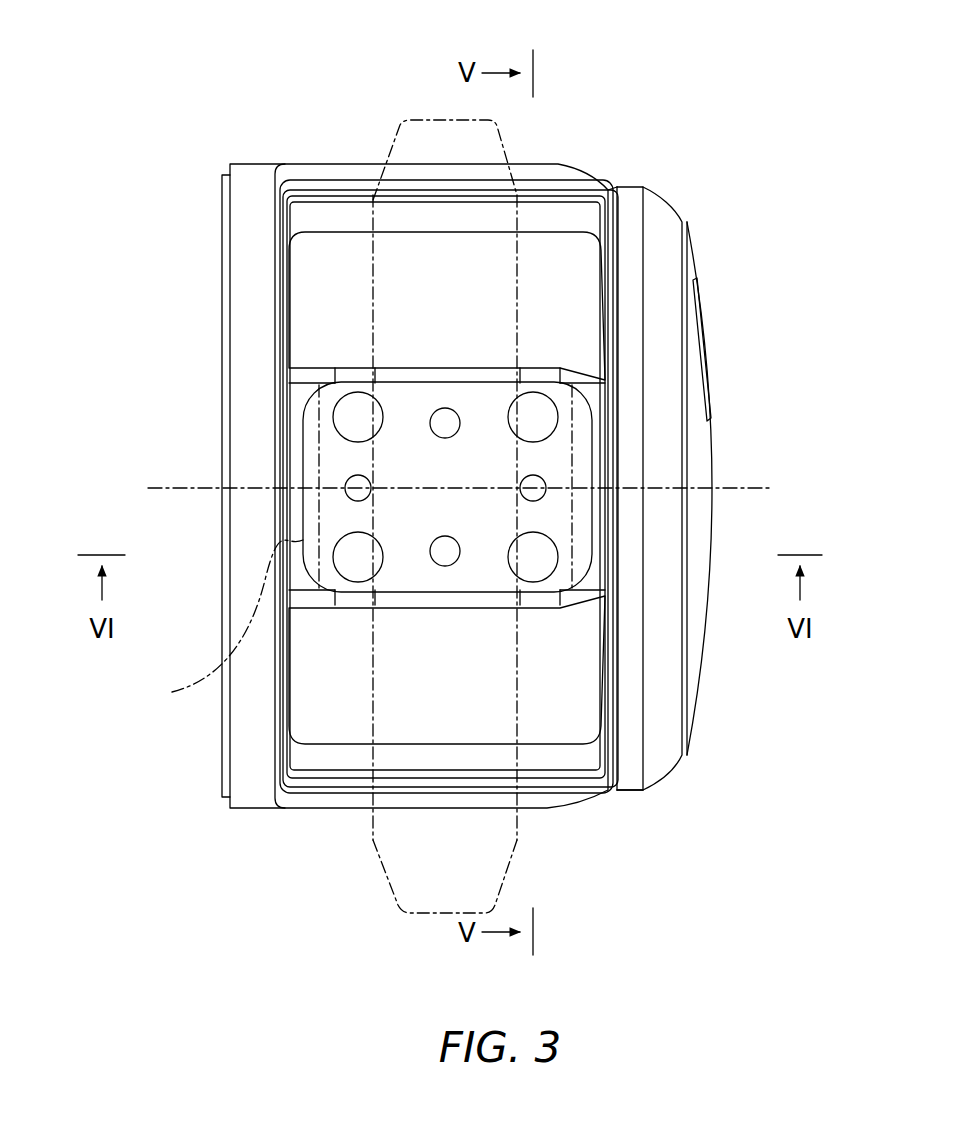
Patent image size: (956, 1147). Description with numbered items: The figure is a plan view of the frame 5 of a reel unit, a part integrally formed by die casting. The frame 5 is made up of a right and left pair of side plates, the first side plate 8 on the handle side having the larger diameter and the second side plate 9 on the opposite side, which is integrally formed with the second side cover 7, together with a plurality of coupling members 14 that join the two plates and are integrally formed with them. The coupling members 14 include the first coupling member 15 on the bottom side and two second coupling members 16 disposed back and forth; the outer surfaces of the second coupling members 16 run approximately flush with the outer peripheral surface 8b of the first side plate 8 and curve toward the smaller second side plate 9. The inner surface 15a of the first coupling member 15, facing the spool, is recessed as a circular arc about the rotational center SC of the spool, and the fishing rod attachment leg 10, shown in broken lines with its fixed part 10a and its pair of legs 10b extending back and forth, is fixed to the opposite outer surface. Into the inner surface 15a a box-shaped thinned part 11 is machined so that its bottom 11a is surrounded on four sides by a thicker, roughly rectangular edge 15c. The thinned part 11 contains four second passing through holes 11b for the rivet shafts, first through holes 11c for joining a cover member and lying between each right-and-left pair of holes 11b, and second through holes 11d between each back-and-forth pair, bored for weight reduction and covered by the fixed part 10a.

The frame 5 is at (692, 160).
The second side cover 7 is at (697, 677).
The first side plate 8 is at (235, 828).
The outer peripheral surface of the first side plate 8b is at (250, 164).
The second side plate 9 is at (630, 790).
The fishing rod attachment leg 10 is at (512, 136).
The fixed part 10a is at (172, 692).
The legs 10b is at (425, 135).
The thinned part 11 is at (492, 398).
The bottom of the thinned part 11a is at (347, 458).
The second passing through holes 11b is at (350, 418).
The first through holes 11c is at (480, 430).
The second through holes 11d is at (352, 500).
The coupling members 14 is at (578, 150).
The first coupling member 15 is at (313, 343).
The inner surface of the first coupling member 15a is at (312, 383).
The edge 15c is at (428, 375).
The second coupling members 16 is at (327, 164).
The rotational center of the spool SC is at (195, 490).